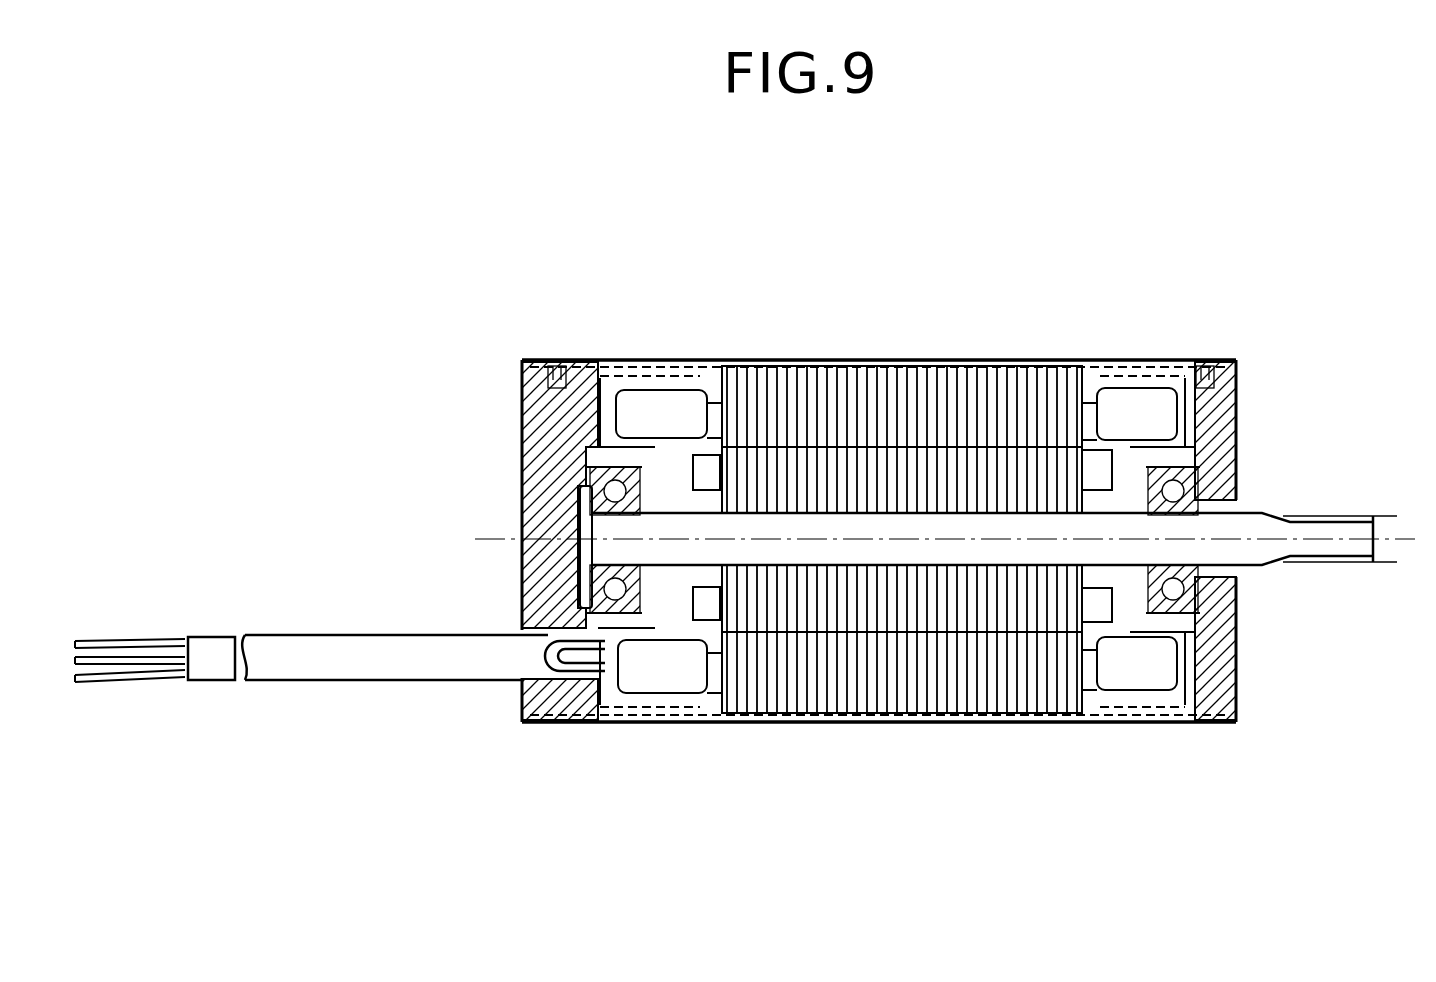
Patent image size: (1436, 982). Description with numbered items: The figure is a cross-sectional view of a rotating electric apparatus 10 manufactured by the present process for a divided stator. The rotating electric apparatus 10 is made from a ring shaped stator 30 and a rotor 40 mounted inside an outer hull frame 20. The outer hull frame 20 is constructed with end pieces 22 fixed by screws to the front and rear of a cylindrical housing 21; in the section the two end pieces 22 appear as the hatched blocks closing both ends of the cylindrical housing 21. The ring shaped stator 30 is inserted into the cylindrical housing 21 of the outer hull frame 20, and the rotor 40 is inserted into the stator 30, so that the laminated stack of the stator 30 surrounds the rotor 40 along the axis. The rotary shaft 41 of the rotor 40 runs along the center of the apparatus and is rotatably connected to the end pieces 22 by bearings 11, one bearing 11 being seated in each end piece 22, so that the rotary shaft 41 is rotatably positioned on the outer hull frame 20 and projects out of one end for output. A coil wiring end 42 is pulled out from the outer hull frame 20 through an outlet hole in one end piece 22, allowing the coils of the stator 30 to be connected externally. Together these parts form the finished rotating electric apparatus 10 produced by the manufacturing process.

The rotating electric apparatus 10 is at (1262, 396).
The bearings 11 is at (628, 445).
The outer hull frame 20 is at (923, 345).
The cylindrical housing 21 is at (1010, 360).
The end pieces 22 is at (545, 452).
The ring shaped stator 30 is at (789, 400).
The rotor 40 is at (897, 602).
The rotary shaft 41 is at (1335, 540).
The coil wiring end 42 is at (277, 638).